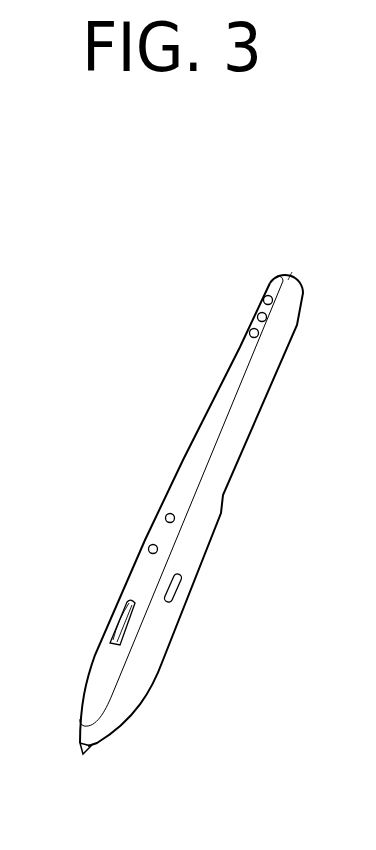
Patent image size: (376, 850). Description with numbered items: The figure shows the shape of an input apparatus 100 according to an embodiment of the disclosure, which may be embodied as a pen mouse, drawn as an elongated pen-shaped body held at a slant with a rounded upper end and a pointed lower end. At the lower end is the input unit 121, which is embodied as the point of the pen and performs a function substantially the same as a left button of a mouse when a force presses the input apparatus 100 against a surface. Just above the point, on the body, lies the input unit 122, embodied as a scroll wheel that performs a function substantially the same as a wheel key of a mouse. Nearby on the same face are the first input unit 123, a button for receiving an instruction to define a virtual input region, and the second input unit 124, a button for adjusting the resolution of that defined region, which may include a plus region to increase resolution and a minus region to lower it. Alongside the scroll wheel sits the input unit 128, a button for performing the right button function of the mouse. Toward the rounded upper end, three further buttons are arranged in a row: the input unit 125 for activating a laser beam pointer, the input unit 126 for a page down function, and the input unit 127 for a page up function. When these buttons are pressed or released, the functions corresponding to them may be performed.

The input apparatus 100 is at (288, 264).
The input unit 121 is at (81, 755).
The input unit 122 is at (114, 615).
The first input unit 123 is at (149, 549).
The second input unit 124 is at (166, 514).
The input unit 125 is at (250, 334).
The input unit 126 is at (258, 316).
The input unit 127 is at (265, 297).
The input unit 128 is at (180, 587).